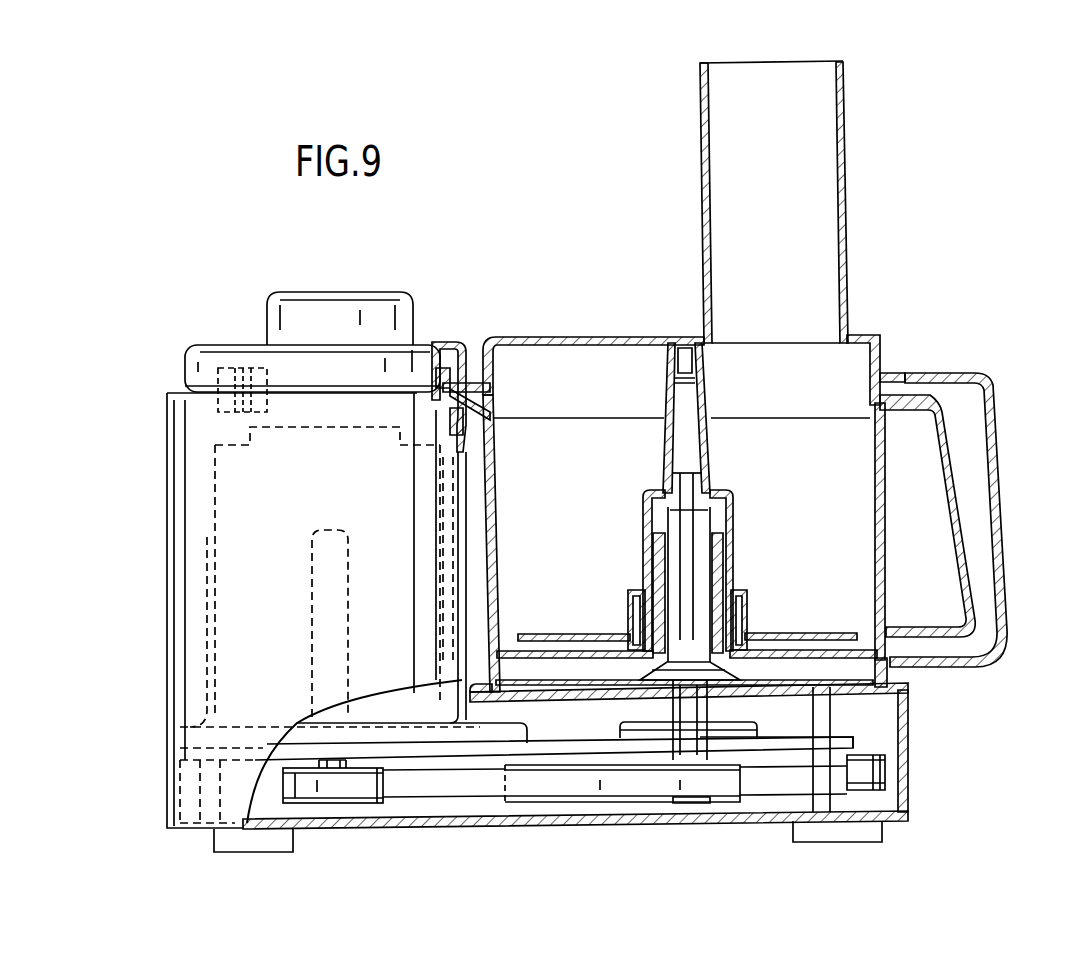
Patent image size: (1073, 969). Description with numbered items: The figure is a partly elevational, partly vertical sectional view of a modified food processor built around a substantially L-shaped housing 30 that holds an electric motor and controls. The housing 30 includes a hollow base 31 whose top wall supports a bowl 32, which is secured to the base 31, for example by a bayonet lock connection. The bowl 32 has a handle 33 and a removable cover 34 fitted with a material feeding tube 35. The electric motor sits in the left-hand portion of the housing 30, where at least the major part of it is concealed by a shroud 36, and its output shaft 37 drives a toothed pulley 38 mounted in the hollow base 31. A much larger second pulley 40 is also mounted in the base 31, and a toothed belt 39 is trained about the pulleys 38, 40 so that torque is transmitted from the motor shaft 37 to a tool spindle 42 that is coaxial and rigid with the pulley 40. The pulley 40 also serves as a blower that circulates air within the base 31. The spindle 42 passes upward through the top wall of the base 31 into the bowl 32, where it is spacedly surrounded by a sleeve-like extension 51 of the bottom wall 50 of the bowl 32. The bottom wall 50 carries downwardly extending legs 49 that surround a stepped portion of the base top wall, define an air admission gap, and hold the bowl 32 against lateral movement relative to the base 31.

The housing 30 is at (160, 511).
The hollow base 31 is at (909, 775).
The bowl 32 is at (888, 516).
The handle 33 is at (1004, 510).
The cover 34 is at (610, 335).
The material feeding tube 35 is at (848, 271).
The shroud 36 is at (217, 612).
The output shaft 37 is at (323, 764).
The toothed pulley 38 is at (357, 803).
The toothed belt 39 is at (473, 780).
The second pulley 40 is at (736, 786).
The tool spindle 42 is at (703, 711).
The legs 49 is at (882, 678).
The bottom wall 50 is at (843, 655).
The sleeve-like extension 51 is at (736, 543).